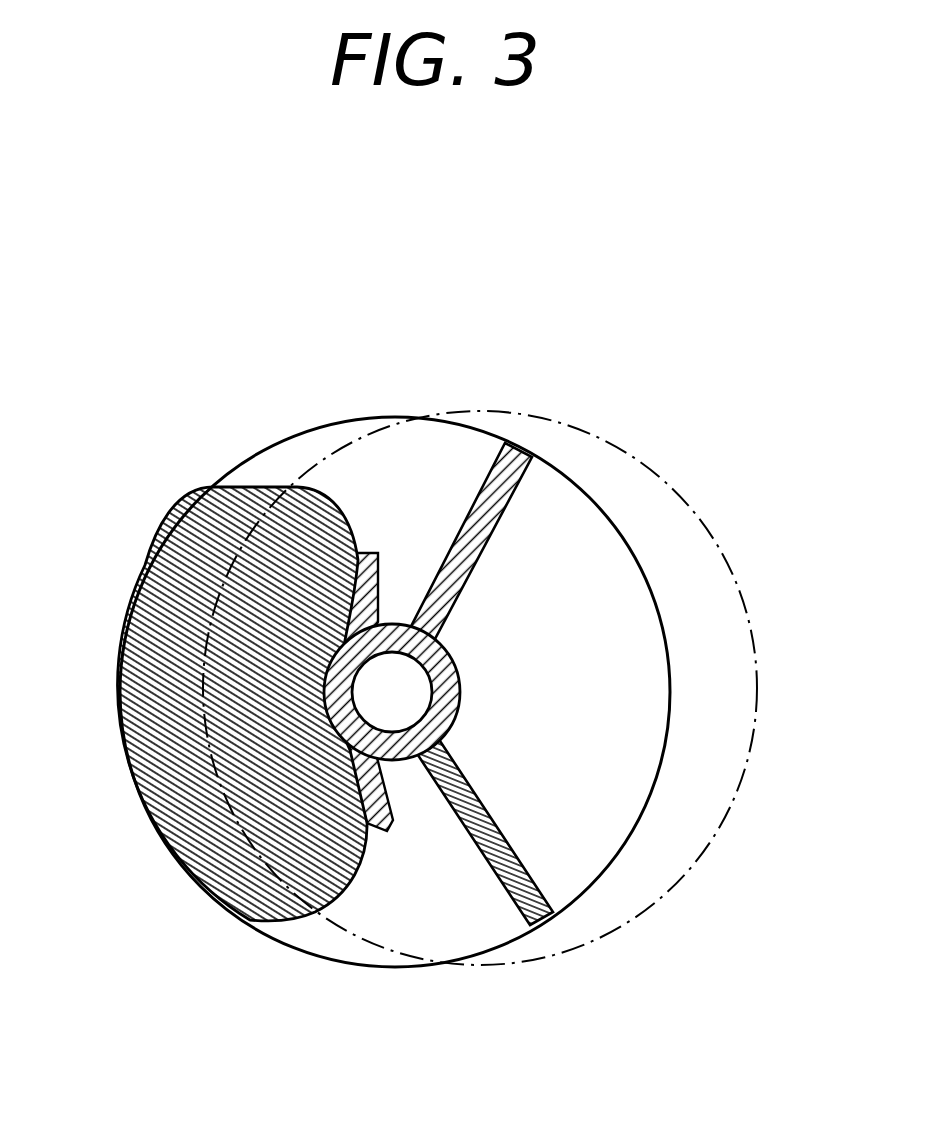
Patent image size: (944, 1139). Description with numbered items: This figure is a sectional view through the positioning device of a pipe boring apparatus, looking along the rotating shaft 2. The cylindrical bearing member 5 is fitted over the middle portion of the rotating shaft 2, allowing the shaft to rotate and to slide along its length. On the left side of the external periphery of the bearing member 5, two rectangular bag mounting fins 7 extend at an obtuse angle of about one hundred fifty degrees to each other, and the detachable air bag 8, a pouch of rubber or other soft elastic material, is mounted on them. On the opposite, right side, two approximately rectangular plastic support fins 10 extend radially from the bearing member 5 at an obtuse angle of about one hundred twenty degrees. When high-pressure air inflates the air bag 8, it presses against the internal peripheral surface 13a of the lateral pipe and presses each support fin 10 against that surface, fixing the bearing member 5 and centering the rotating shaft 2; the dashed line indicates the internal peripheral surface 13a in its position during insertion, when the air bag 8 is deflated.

The rotating shaft 2 is at (390, 688).
The bearing member 5 is at (405, 757).
The bag mounting fin 7 is at (371, 835).
The air bag 8 is at (180, 827).
The support fin 10 is at (518, 858).
The internal peripheral surface 13a is at (313, 430).